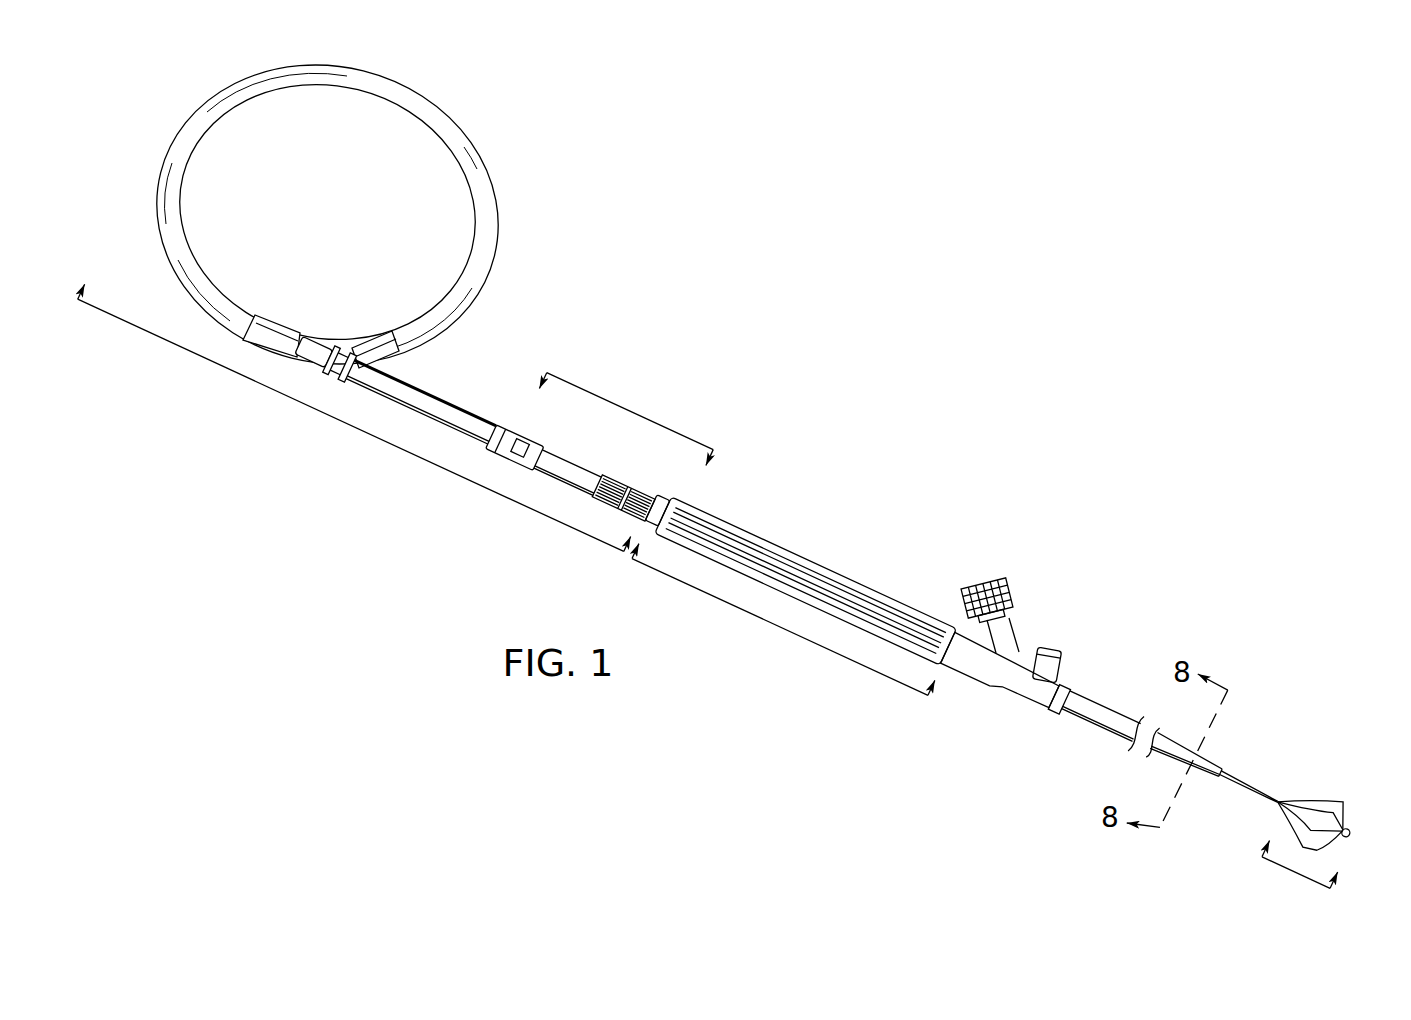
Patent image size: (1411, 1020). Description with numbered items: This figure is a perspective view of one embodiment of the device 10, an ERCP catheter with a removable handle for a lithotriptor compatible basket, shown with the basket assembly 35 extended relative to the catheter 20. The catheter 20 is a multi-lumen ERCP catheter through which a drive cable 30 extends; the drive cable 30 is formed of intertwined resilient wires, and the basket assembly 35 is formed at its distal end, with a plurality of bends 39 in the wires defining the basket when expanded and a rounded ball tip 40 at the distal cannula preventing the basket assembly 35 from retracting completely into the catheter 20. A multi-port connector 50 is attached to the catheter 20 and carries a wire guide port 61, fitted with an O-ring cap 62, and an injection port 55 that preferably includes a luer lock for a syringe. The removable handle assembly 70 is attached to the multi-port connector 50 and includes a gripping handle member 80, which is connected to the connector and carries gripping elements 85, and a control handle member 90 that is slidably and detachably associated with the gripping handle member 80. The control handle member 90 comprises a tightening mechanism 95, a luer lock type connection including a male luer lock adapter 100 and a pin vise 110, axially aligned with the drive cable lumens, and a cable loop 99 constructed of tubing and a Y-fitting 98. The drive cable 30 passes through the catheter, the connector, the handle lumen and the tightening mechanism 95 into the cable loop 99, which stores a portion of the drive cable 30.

The device 10 is at (712, 731).
The catheter 20 is at (1091, 731).
The drive cable 30 is at (1254, 777).
The basket assembly 35 is at (1287, 871).
The bends 39 is at (1348, 797).
The ball tip 40 is at (1353, 820).
The multi-port connector 50 is at (1012, 694).
The injection port 55 is at (1066, 650).
The wire guide port 61 is at (1013, 628).
The O-ring cap 62 is at (997, 575).
The removable handle assembly 70 is at (497, 554).
The gripping handle member 80 is at (777, 627).
The gripping elements 85 is at (822, 566).
The control handle member 90 is at (334, 419).
The tightening mechanism 95 is at (625, 408).
The Y-fitting 98 is at (311, 336).
The cable loop 99 is at (440, 100).
The male luer lock adapter 100 is at (638, 489).
The pin vise 110 is at (580, 456).